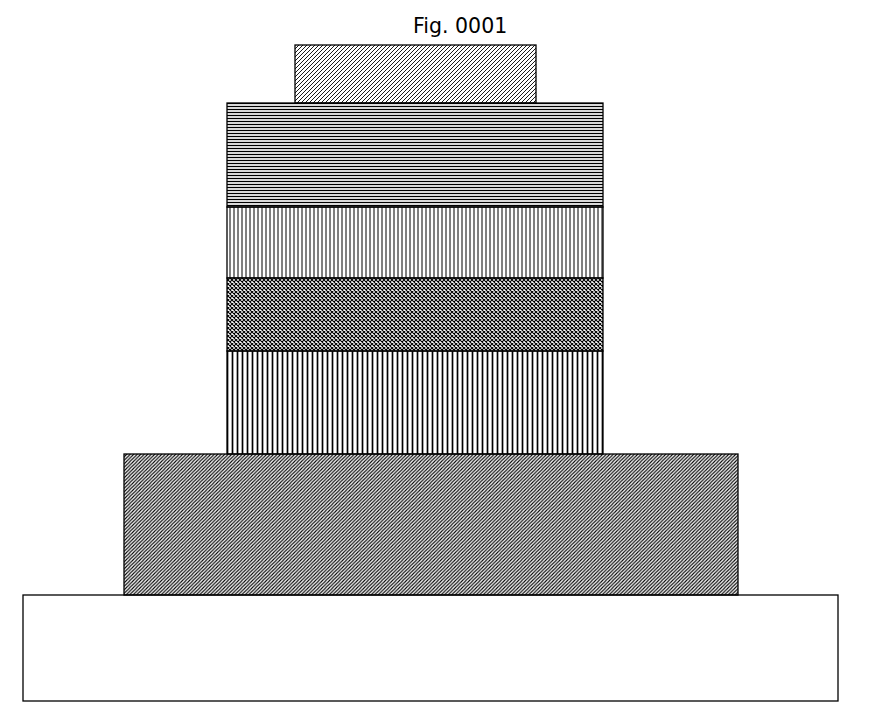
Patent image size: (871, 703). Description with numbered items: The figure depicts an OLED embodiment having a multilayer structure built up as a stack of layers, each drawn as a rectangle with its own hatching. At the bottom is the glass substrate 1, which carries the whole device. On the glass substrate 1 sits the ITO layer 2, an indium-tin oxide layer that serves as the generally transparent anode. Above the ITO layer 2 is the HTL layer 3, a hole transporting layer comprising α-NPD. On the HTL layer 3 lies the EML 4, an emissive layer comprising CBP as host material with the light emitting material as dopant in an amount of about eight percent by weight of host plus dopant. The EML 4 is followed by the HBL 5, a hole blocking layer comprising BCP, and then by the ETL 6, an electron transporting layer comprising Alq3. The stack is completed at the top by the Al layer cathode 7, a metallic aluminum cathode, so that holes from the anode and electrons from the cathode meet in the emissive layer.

The glass substrate 1 is at (430, 648).
The ITO layer 2 is at (431, 524).
The HTL layer 3 is at (415, 402).
The EML 4 is at (415, 314).
The HBL 5 is at (415, 242).
The ETL 6 is at (415, 155).
The Al layer cathode 7 is at (415, 74).